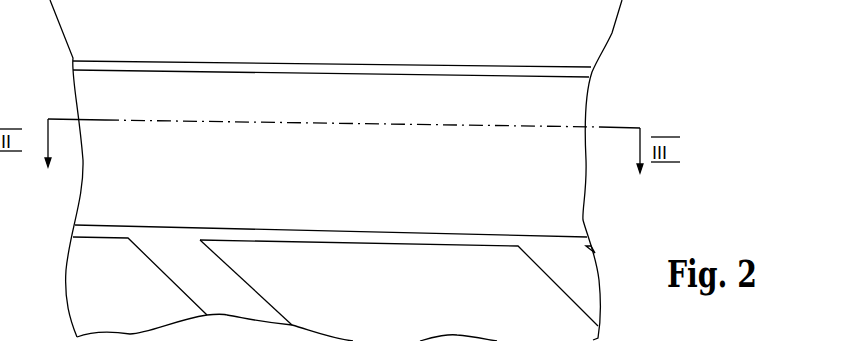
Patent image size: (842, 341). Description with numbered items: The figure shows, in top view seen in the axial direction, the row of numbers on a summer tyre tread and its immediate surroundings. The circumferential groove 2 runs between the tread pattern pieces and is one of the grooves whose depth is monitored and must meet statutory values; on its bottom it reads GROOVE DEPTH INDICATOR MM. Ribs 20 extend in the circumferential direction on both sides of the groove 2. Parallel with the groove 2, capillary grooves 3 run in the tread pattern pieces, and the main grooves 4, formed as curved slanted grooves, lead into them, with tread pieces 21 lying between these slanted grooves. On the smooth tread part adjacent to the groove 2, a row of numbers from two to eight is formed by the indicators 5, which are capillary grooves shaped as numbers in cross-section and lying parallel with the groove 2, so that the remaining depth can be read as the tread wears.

The groove 2 is at (540, 187).
The capillary groove 3 is at (395, 237).
The main groove 4 is at (243, 298).
The indicator 5 is at (148, 141).
The rib 20 is at (345, 193).
The tread piece 21 is at (420, 295).